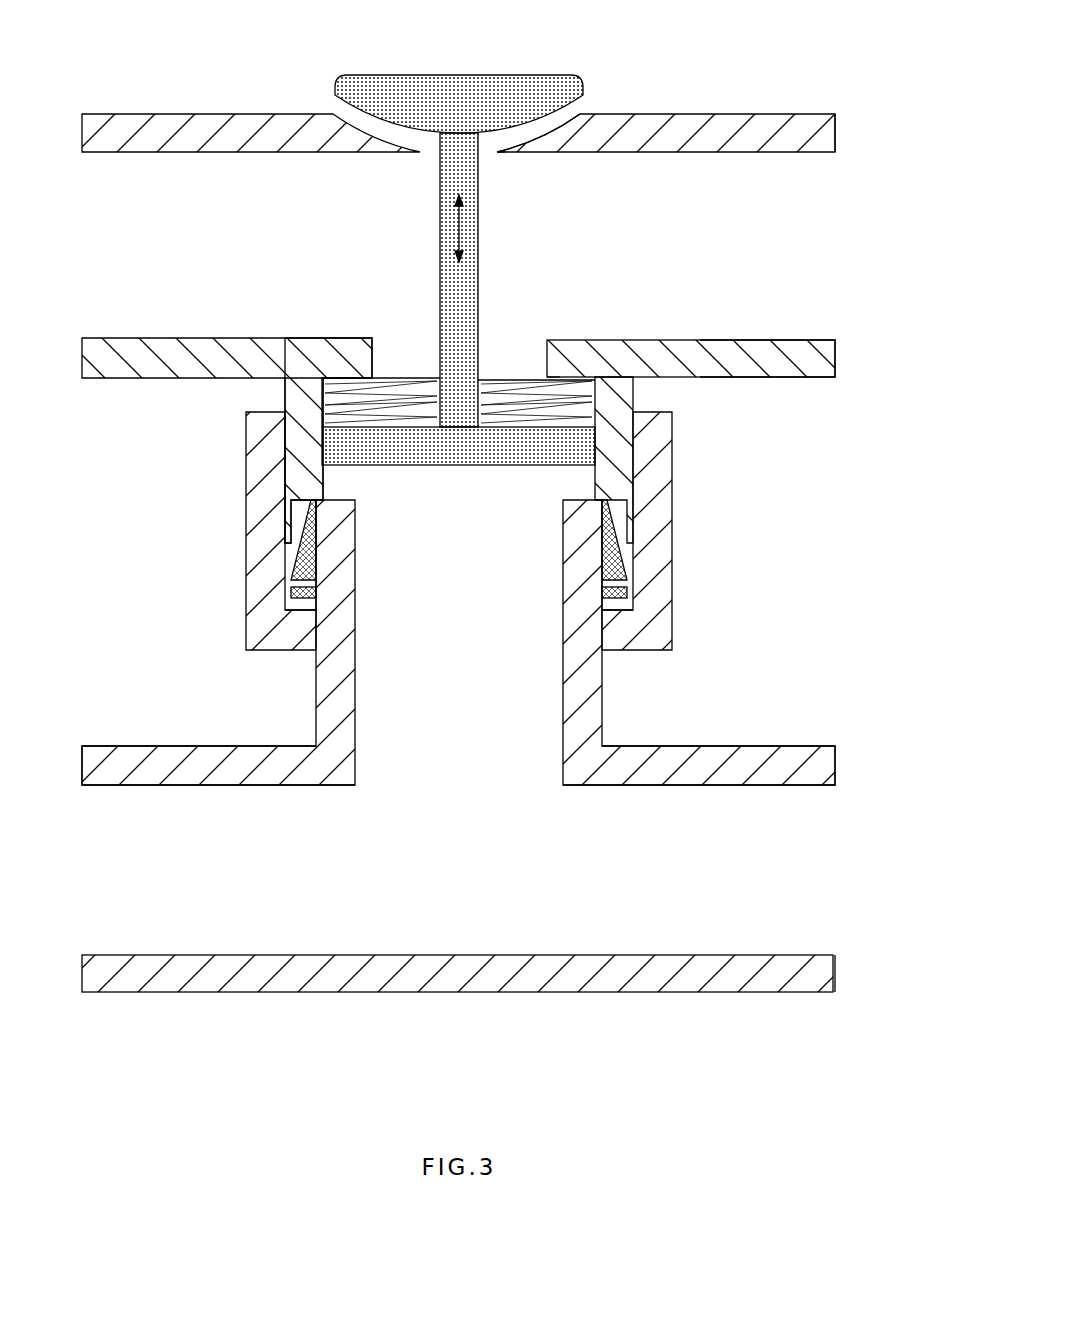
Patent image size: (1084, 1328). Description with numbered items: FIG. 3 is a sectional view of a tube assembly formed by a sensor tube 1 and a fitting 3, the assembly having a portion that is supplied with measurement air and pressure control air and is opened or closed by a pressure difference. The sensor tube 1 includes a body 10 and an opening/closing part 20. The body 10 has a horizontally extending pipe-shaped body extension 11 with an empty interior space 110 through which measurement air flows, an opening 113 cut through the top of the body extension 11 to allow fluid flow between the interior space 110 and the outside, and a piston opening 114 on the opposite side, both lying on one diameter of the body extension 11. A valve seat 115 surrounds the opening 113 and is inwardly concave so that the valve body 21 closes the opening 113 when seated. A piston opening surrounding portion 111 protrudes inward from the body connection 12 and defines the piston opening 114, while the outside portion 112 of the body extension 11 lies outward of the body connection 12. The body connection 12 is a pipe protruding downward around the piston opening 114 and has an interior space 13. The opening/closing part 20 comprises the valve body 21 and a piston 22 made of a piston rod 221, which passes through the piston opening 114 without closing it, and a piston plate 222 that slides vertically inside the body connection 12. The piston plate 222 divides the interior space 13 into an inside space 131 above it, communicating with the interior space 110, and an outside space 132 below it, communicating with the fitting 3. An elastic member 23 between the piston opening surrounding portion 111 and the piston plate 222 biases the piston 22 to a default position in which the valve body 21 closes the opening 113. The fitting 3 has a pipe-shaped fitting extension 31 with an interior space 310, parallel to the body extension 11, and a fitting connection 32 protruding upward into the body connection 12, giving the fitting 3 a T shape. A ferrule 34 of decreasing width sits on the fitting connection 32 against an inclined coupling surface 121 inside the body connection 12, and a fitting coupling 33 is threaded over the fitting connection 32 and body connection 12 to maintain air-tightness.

The sensor tube 1 is at (845, 472).
The fitting 3 is at (500, 598).
The body 10 is at (458, 404).
The body extension 11 is at (690, 376).
The body connection 12 is at (618, 393).
The interior space 13 is at (227, 440).
The opening/closing part 20 is at (436, 291).
The valve body 21 is at (456, 89).
The piston 22 is at (458, 345).
The elastic member 23 is at (404, 376).
The fitting extension 31 is at (800, 757).
The fitting connection 32 is at (560, 722).
The fitting coupling 33 is at (650, 625).
The ferrule 34 is at (625, 558).
The interior space 110 is at (688, 263).
The piston opening surrounding portion 111 is at (568, 350).
The outside portion 112 is at (805, 340).
The opening 113 is at (490, 147).
The piston opening 114 is at (506, 356).
The valve seat 115 is at (541, 128).
The inclined coupling surface 121 is at (612, 520).
The inside space 131 is at (340, 396).
The outside space 132 is at (338, 485).
The piston rod 221 is at (458, 360).
The piston plate 222 is at (485, 512).
The interior space 310 is at (687, 885).